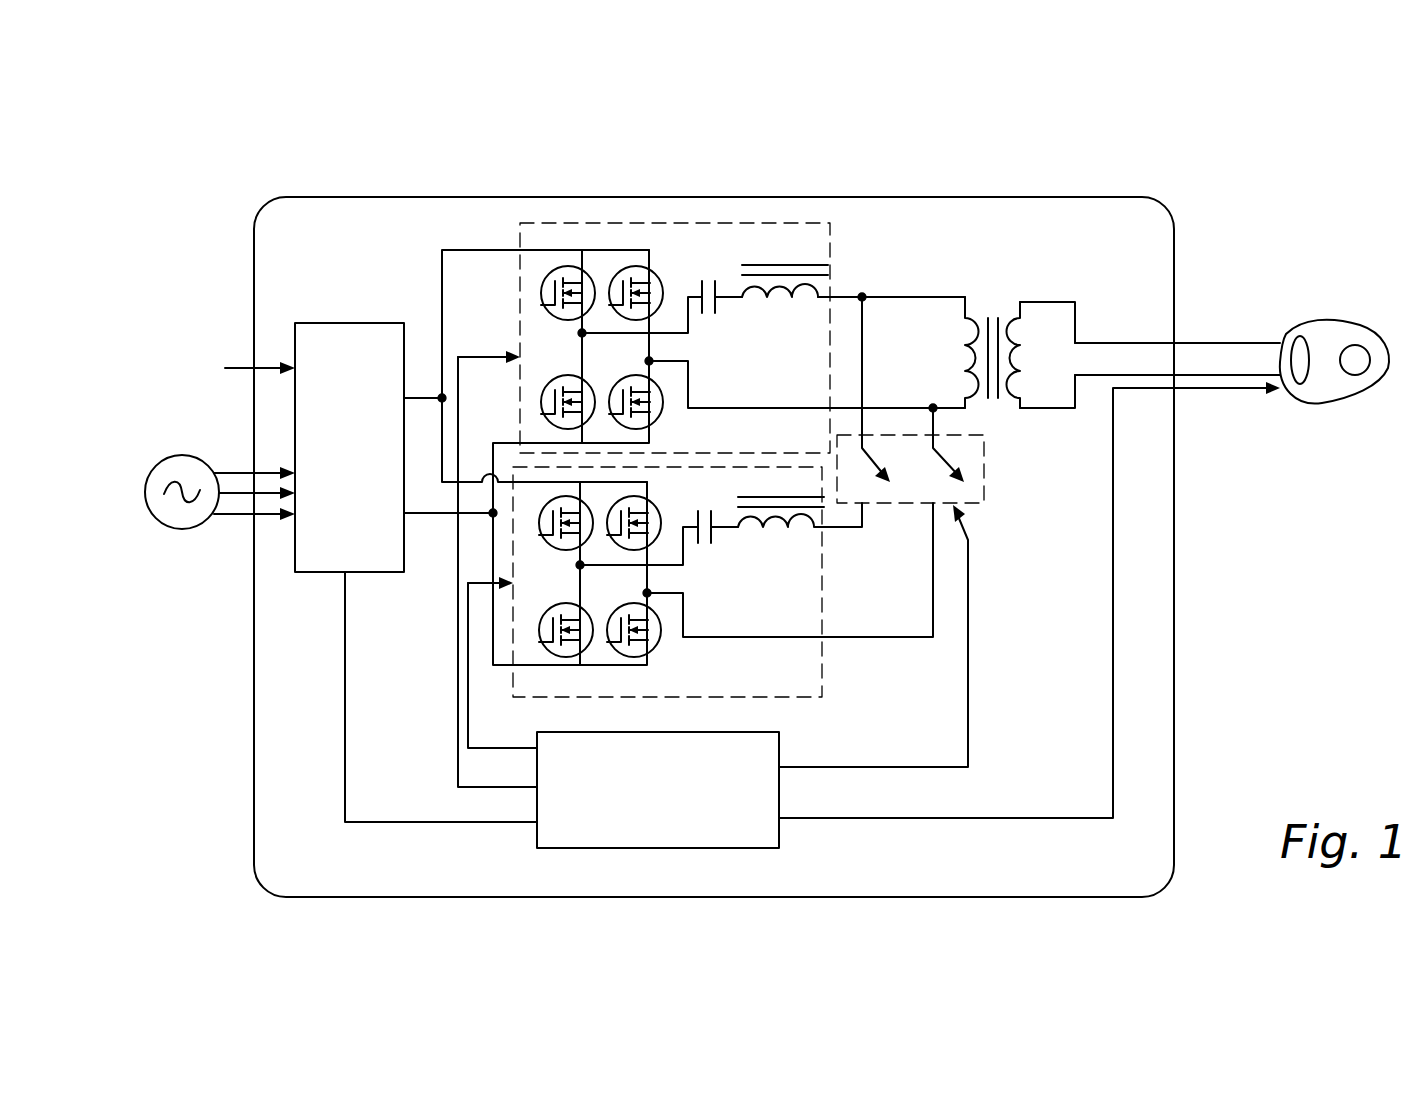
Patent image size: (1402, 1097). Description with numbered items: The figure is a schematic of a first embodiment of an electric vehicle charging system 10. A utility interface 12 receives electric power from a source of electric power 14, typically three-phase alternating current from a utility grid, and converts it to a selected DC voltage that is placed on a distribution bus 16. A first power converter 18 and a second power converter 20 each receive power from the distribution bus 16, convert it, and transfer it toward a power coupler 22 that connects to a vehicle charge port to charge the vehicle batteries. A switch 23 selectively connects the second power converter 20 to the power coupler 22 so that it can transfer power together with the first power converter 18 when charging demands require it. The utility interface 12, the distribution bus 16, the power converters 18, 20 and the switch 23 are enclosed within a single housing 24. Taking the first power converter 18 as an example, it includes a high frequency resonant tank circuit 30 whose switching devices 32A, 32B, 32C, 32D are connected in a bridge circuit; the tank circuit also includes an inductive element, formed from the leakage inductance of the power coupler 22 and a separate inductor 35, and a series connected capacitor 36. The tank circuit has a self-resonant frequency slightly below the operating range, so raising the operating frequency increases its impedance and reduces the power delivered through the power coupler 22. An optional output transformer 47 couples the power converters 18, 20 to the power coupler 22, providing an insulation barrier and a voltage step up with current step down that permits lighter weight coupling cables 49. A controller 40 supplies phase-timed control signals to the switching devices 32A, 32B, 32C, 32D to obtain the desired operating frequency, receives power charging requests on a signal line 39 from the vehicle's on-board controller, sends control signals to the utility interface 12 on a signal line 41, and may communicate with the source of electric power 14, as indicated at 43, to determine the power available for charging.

The electric vehicle charging system 10 is at (950, 186).
The utility interface 12 is at (355, 323).
The source of electric power 14 is at (176, 455).
The distribution bus 16 is at (477, 234).
The first power converter 18 is at (610, 223).
The second power converter 20 is at (825, 688).
The power coupler 22 is at (1330, 318).
The switch 23 is at (1015, 477).
The housing 24 is at (1175, 630).
The high frequency resonant tank circuit 30 is at (744, 258).
The switching device 32A is at (548, 272).
The switching device 32B is at (656, 270).
The switching device 32C is at (686, 407).
The switching device 32D is at (546, 380).
The inductor 35 is at (821, 297).
The capacitor 36 is at (715, 283).
The signal line 39 is at (1068, 818).
The controller 40 is at (780, 835).
The signal line 41 is at (345, 640).
The communication link to the source of electric power 43 is at (268, 367).
The output transformer 47 is at (1000, 302).
The coupling cables 49 is at (1215, 343).